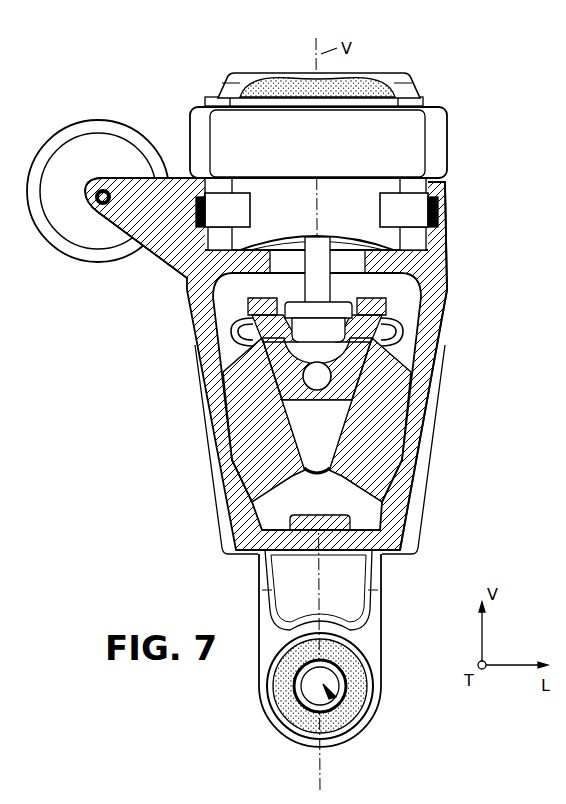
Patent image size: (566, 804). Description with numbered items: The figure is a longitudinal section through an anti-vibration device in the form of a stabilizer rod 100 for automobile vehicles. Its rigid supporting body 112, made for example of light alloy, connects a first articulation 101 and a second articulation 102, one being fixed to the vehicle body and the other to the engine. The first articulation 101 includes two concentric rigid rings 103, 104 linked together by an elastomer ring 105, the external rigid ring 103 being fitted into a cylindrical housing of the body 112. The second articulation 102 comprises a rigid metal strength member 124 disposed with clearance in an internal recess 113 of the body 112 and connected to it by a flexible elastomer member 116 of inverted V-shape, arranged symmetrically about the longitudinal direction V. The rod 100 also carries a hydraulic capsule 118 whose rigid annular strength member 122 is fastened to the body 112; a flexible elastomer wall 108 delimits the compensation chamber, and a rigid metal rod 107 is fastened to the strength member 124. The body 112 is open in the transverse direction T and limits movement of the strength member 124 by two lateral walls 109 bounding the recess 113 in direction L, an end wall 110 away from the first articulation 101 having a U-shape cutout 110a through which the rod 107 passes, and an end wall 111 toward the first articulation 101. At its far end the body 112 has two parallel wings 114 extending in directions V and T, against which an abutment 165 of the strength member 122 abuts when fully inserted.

The stabilizer rod 100 is at (488, 150).
The first articulation 101 is at (341, 698).
The second articulation 102 is at (306, 377).
The external rigid ring 103 is at (368, 666).
The rigid ring 104 is at (298, 691).
The elastomer ring 105 is at (293, 711).
The rigid metal rod 107 is at (250, 304).
The flexible elastomer wall 108 is at (398, 86).
The lateral walls 109 is at (229, 456).
The end wall 110 is at (242, 261).
The U-shape cutout 110a is at (418, 283).
The end wall 111 is at (268, 553).
The rigid supporting body 112 is at (451, 338).
The internal recess 113 is at (219, 361).
The wings 114 is at (191, 182).
The flexible elastomer member 116 is at (379, 439).
The hydraulic capsule 118 is at (393, 148).
The rigid annular strength member 122 is at (412, 192).
The rigid metal strength member 124 is at (386, 379).
The abutment 165 is at (200, 213).